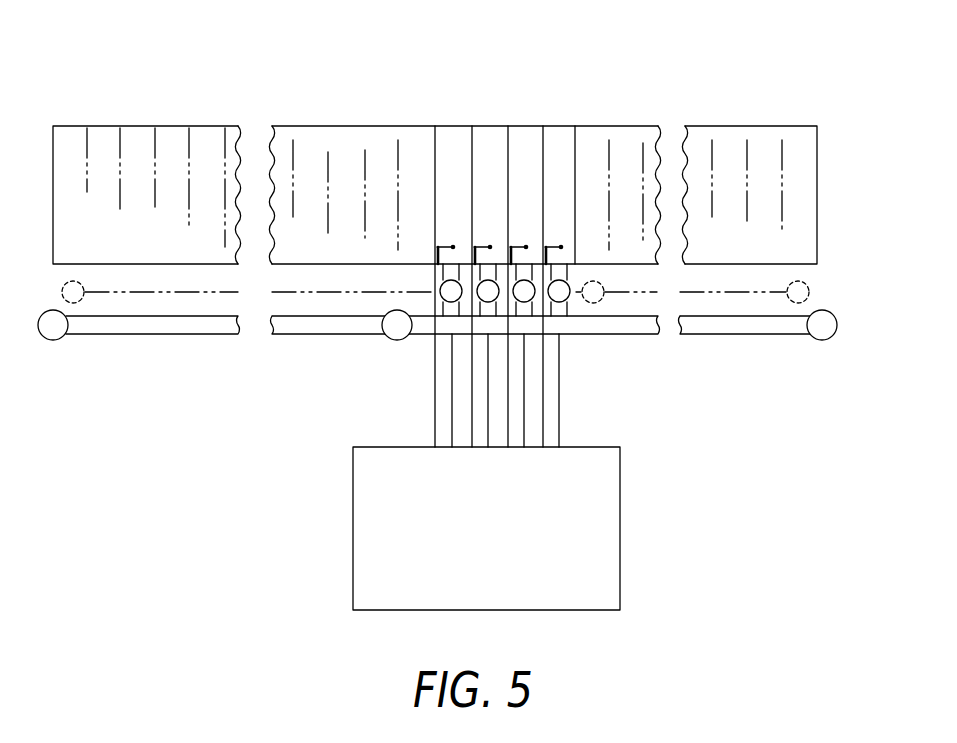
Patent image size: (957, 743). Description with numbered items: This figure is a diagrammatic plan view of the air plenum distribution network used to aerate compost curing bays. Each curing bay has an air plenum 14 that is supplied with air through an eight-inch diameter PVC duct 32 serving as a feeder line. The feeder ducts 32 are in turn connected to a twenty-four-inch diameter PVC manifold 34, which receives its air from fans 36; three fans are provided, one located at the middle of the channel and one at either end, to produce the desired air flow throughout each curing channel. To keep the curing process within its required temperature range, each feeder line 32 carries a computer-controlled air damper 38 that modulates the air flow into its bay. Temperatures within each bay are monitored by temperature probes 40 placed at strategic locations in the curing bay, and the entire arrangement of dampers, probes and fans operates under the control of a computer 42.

The air plenums 14 is at (382, 193).
The pvc ducts 32 is at (533, 303).
The pvc manifold 34 is at (295, 322).
The fans 36 is at (63, 336).
The air damper 38 is at (525, 291).
The temperature probes 40 is at (445, 245).
The computer 42 is at (612, 488).